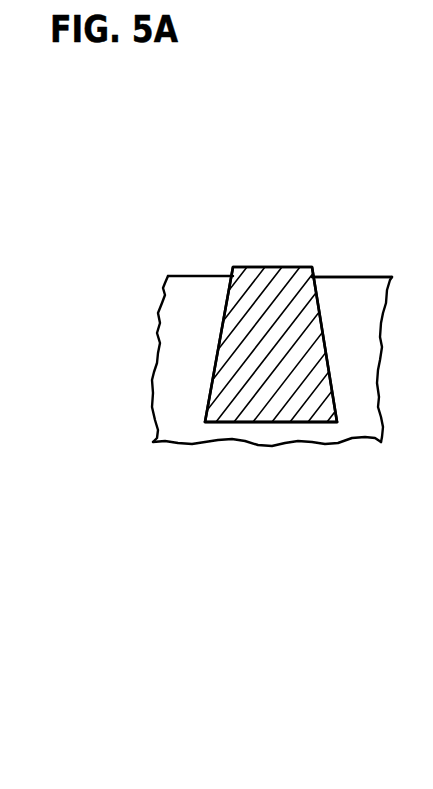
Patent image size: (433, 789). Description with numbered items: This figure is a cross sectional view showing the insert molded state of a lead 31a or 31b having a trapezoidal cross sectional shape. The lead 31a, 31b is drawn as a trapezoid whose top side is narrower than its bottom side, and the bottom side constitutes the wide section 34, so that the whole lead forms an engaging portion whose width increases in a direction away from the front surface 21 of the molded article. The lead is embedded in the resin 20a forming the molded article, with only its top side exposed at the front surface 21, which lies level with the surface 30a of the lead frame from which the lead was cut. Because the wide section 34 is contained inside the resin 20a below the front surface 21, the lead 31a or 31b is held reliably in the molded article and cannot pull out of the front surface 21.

The resin 20a is at (158, 341).
The front surface 21 is at (187, 276).
The surface of the lead frame 30a is at (352, 277).
The lead 31a is at (0, 0).
The lead 31b is at (271, 344).
The wide section 34 is at (205, 423).